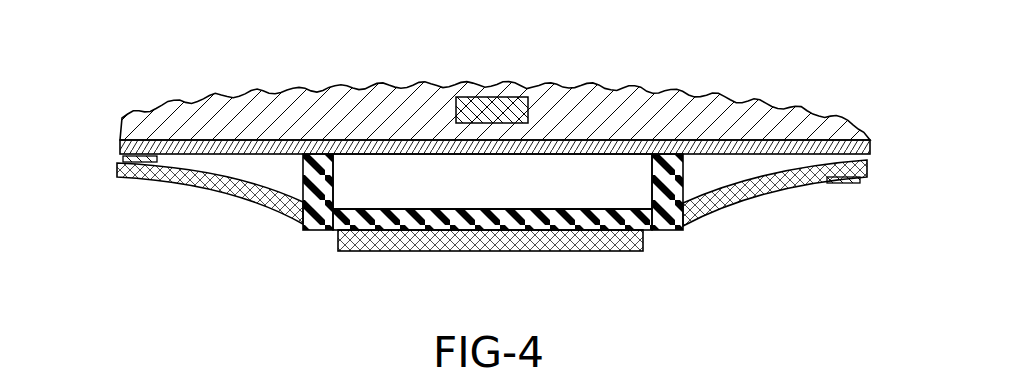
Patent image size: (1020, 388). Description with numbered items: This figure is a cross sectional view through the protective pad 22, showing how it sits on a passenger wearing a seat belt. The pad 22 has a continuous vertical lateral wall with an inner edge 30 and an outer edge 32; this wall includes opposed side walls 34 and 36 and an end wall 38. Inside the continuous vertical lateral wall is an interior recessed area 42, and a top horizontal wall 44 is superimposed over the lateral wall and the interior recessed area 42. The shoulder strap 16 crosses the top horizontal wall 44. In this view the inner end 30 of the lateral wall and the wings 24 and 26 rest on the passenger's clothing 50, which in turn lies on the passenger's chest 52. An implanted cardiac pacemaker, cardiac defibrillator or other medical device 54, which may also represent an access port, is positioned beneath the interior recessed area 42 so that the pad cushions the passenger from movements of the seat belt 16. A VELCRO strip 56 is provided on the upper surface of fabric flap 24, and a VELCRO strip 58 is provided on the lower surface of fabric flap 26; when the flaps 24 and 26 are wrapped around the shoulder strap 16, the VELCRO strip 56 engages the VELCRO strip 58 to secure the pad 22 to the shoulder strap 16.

The shoulder strap 16 is at (595, 252).
The pad 22 is at (469, 166).
The wing 24 is at (750, 187).
The wing 26 is at (238, 192).
The inner edge 30 is at (327, 168).
The outer edge 32 is at (333, 207).
The side wall 34 is at (333, 174).
The side wall 36 is at (653, 172).
The end wall 38 is at (530, 190).
The interior recessed area 42 is at (467, 178).
The top horizontal wall 44 is at (398, 233).
The passenger's clothing 50 is at (118, 147).
The passenger's chest 52 is at (247, 78).
The medical device 54 is at (476, 102).
The VELCRO strip 56 is at (843, 183).
The VELCRO strip 58 is at (149, 170).